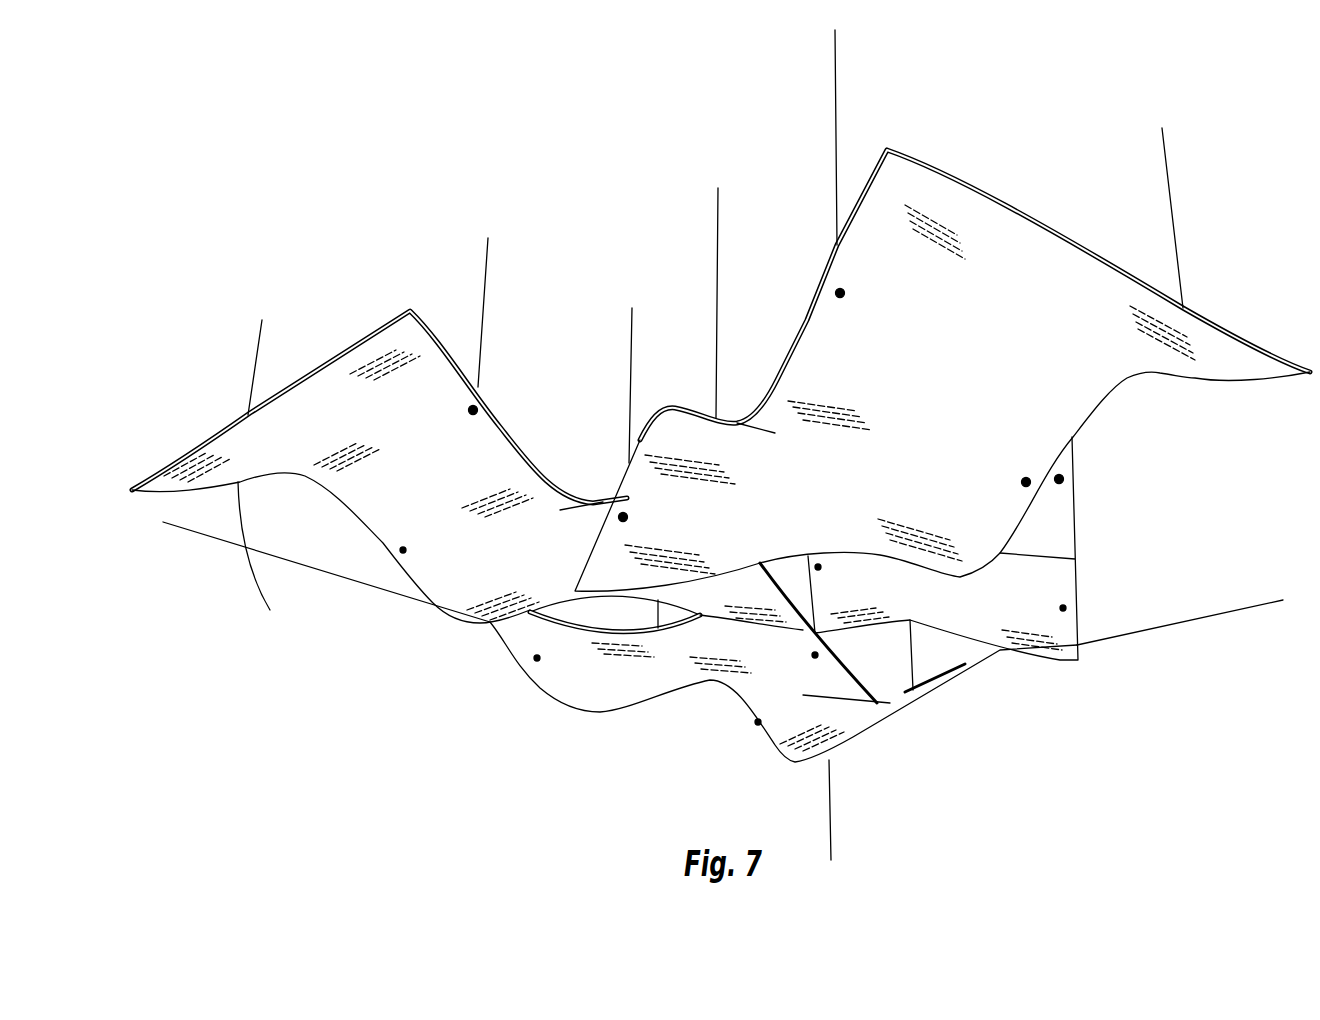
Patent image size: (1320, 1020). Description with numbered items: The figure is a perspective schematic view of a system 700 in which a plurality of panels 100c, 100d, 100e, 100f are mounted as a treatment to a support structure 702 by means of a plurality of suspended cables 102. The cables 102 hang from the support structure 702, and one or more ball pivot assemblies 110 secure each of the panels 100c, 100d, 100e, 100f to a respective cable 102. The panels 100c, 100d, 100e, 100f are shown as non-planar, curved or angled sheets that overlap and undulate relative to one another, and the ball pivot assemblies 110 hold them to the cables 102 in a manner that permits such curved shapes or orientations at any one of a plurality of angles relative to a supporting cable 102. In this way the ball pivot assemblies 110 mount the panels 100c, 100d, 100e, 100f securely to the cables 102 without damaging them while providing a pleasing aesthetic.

The system 700 is at (280, 208).
The support structure 702 is at (632, 122).
The suspended cable 102 is at (837, 125).
The ball pivot assembly 110 is at (623, 517).
The panel 100c is at (453, 472).
The panel 100d is at (962, 365).
The panel 100e is at (997, 620).
The panel 100f is at (812, 690).